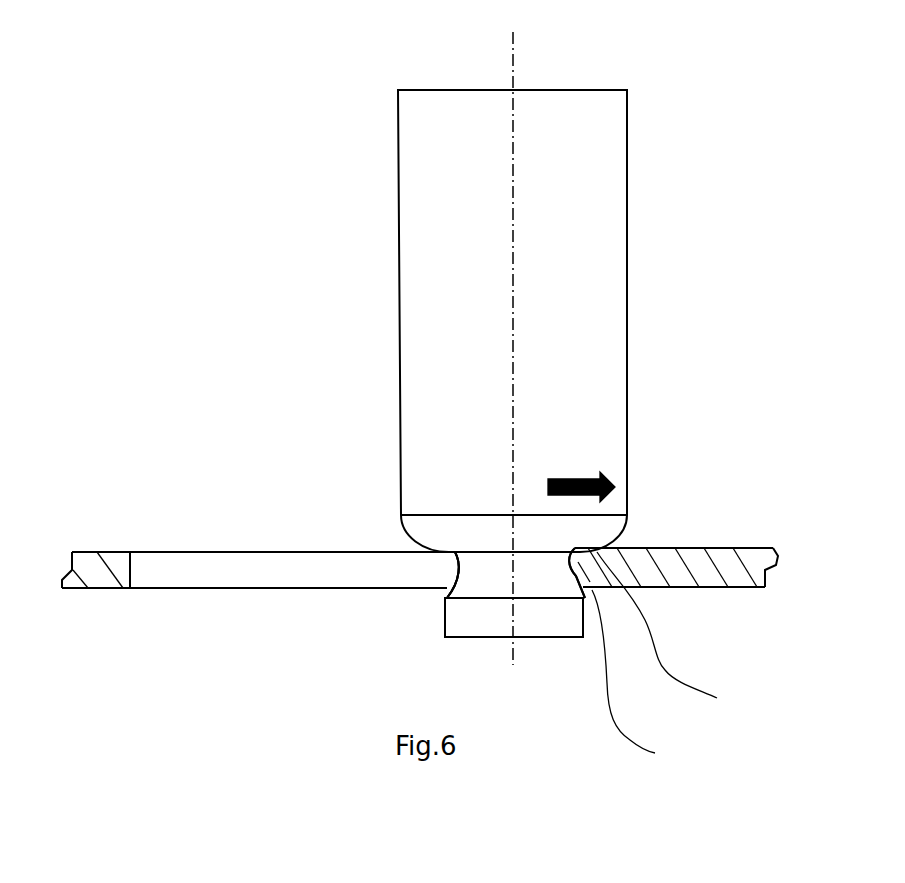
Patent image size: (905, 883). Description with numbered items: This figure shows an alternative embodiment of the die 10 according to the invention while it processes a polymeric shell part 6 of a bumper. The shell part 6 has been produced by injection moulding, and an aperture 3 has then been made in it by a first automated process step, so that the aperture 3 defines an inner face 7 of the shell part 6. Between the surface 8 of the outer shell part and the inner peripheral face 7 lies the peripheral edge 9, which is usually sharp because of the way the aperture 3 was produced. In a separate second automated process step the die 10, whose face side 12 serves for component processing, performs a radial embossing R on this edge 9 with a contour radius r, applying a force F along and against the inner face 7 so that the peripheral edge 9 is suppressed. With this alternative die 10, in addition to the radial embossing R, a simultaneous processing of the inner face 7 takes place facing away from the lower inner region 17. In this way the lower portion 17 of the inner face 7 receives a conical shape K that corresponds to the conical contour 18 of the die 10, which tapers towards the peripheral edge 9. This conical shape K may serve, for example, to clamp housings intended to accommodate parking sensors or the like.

The die 10 is at (462, 350).
The aperture 3 is at (293, 568).
The shell part 6 is at (675, 558).
The inner face 7 is at (140, 546).
The surface of outer shell part 8 is at (725, 548).
The peripheral edge 9 is at (130, 553).
The face side 12 is at (676, 662).
The lower portion of the inner face 17 is at (140, 586).
The conical contour 18 is at (472, 568).
The force F is at (581, 467).
The radial embossing R is at (590, 571).
The conical shape K is at (593, 599).
The contour radius r is at (446, 565).